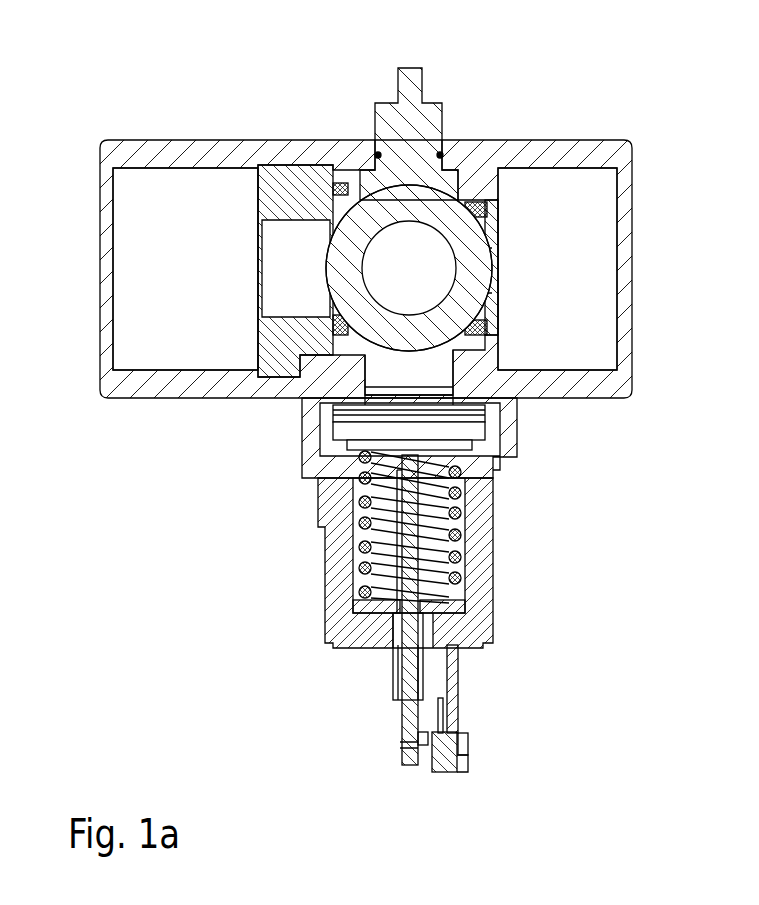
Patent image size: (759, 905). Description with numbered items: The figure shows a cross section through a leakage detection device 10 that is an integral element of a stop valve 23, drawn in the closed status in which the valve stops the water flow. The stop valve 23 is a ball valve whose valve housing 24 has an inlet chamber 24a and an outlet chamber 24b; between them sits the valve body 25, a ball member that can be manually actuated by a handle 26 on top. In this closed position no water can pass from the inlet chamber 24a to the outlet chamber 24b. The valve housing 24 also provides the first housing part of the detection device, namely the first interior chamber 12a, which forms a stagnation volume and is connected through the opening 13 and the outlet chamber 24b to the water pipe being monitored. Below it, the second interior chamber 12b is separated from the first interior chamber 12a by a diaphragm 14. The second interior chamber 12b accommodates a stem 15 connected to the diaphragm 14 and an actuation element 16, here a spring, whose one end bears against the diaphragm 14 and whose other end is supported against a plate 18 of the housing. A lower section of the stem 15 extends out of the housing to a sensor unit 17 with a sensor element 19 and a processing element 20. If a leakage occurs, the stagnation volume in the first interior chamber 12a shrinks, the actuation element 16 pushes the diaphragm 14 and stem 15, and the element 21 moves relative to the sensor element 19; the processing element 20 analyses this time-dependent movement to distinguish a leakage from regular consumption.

The leakage detection device 10 is at (429, 555).
The first interior chamber 12a is at (330, 432).
The second interior chamber 12b is at (348, 473).
The opening 13 is at (440, 383).
The diaphragm 14 is at (500, 464).
The stem 15 is at (412, 537).
The actuation element 16 is at (357, 575).
The sensor unit 17 is at (478, 750).
The plate 18 is at (447, 606).
The sensor element 19 is at (442, 772).
The processing element 20 is at (468, 737).
The element 21 is at (420, 748).
The stop valve 23 is at (363, 222).
The valve housing 24 is at (335, 150).
The inlet chamber 24a is at (133, 278).
The outlet chamber 24b is at (594, 279).
The valve body 25 is at (463, 220).
The handle 26 is at (420, 110).